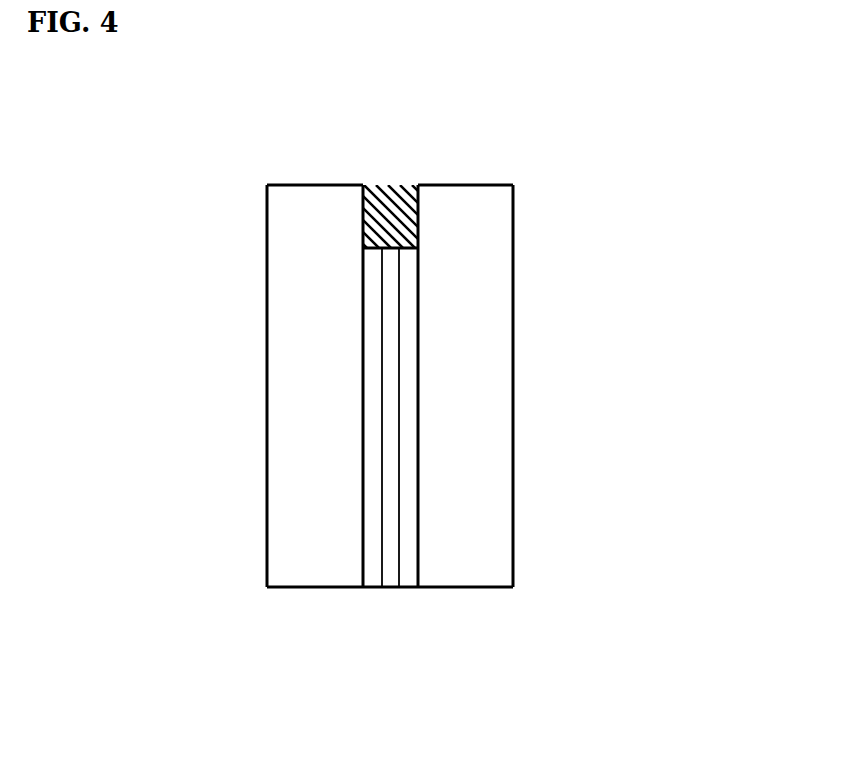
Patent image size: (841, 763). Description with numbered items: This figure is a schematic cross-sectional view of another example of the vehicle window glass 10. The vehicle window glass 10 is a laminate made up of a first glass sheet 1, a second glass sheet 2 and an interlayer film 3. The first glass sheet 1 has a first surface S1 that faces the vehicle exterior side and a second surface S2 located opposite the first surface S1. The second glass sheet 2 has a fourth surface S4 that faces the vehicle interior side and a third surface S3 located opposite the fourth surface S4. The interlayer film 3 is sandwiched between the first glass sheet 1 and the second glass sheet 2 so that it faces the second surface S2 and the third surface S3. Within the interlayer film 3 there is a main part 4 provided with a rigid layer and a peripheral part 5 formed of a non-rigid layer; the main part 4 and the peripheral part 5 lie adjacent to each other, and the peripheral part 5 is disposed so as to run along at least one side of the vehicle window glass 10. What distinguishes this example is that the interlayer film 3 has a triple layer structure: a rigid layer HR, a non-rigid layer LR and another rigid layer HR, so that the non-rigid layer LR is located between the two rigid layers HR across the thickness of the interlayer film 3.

The vehicle window glass 10 is at (614, 152).
The first glass sheet 1 is at (465, 390).
The second glass sheet 2 is at (296, 389).
The interlayer film 3 is at (397, 389).
The main part 4 is at (361, 444).
The peripheral part 5 is at (361, 224).
The first surface S1 is at (512, 183).
The second surface S2 is at (417, 183).
The third surface S3 is at (362, 183).
The fourth surface S4 is at (266, 183).
The rigid layer HR is at (373, 358).
The non-rigid layer LR is at (391, 434).